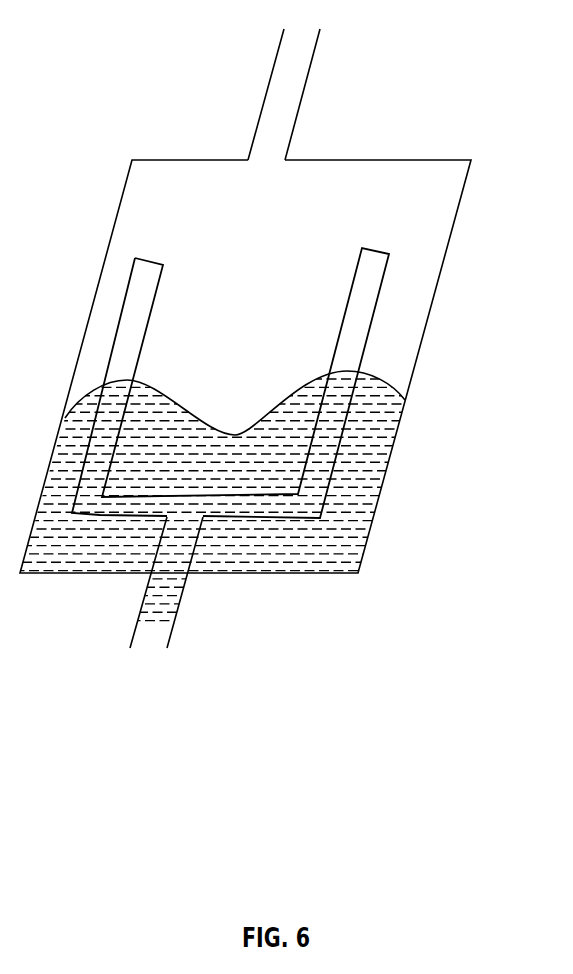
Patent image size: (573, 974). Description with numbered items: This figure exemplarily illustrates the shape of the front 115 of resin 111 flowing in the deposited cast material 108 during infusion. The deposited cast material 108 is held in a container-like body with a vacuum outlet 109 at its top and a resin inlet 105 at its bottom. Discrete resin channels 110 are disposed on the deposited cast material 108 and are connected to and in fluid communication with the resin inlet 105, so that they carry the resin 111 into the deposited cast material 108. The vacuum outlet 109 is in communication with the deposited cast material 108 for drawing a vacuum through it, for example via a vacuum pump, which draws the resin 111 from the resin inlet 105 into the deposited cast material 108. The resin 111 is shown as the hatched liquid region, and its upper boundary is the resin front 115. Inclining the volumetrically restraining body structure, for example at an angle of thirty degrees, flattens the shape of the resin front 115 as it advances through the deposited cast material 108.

The resin inlet 105 is at (175, 640).
The deposited cast material 108 is at (416, 320).
The vacuum outlet 109 is at (302, 115).
The resin channels 110 is at (324, 337).
The resin 111 is at (372, 458).
The resin front 115 is at (388, 373).